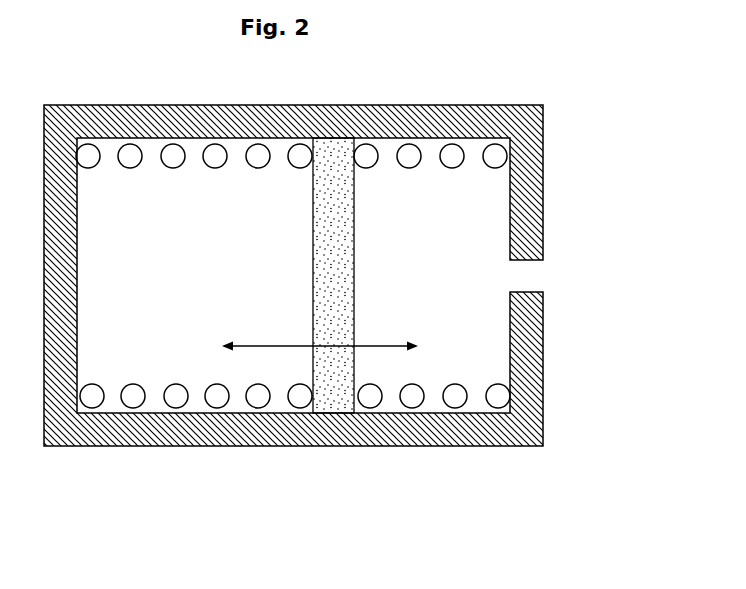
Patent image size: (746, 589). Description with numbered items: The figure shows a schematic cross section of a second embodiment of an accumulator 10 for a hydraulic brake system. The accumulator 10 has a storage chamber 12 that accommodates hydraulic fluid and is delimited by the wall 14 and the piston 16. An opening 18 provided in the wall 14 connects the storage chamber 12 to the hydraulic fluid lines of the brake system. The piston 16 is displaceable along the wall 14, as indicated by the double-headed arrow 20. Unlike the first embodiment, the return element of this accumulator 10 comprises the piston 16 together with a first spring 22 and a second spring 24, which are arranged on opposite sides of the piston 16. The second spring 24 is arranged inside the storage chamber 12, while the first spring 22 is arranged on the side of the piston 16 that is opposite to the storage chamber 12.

The accumulator 10 is at (579, 101).
The storage chamber 12 is at (441, 294).
The wall 14 is at (433, 422).
The piston 16 is at (326, 243).
The opening 18 is at (527, 277).
The double-headed arrow 20 is at (320, 334).
The first spring 22 is at (175, 172).
The second spring 24 is at (408, 169).